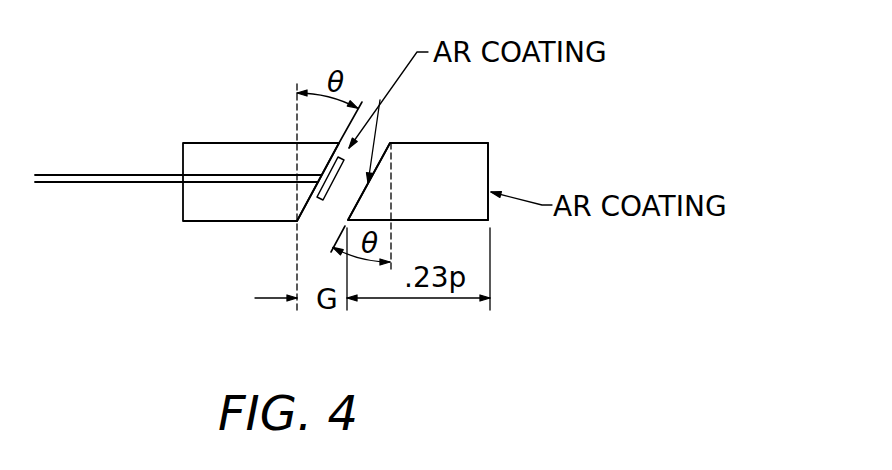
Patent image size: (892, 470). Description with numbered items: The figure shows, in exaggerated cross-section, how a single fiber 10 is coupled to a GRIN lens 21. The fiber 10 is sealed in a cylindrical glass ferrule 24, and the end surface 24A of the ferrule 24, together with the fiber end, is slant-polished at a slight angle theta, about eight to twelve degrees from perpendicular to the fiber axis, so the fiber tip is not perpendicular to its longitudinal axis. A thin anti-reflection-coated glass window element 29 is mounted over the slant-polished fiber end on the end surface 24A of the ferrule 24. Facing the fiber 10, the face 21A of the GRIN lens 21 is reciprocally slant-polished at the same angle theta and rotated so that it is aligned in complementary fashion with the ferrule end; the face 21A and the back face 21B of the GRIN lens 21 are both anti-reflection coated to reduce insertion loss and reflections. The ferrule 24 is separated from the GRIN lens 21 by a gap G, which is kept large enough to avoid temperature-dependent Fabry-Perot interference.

The fiber 10 is at (178, 202).
The glass ferrule 24 is at (258, 158).
The end surface of the ferrule 24A is at (289, 201).
The window element 29 is at (293, 223).
The GRIN lens 21 is at (443, 158).
The face of GRIN lens 21A is at (413, 158).
The back face of the GRIN lens 21B is at (559, 180).